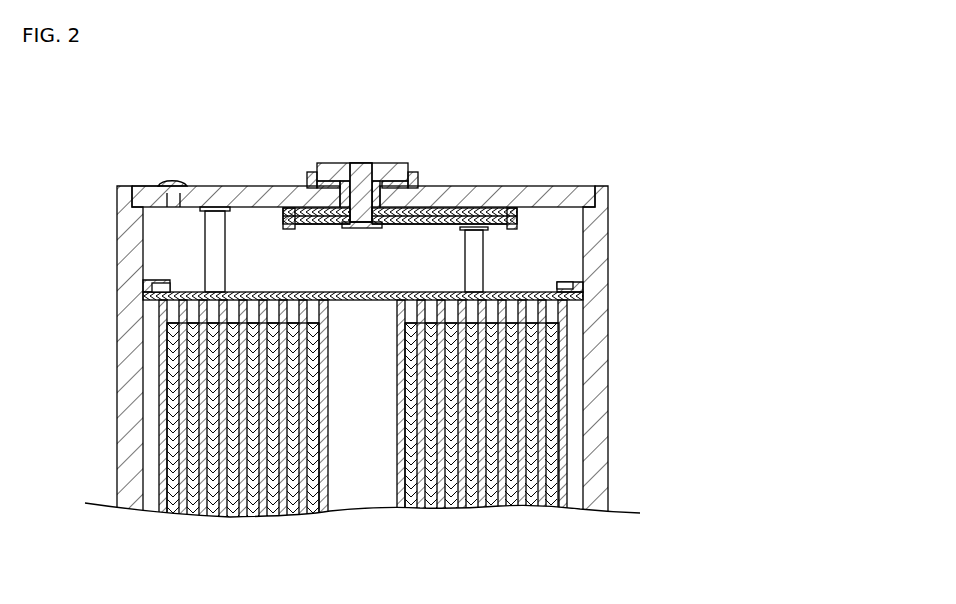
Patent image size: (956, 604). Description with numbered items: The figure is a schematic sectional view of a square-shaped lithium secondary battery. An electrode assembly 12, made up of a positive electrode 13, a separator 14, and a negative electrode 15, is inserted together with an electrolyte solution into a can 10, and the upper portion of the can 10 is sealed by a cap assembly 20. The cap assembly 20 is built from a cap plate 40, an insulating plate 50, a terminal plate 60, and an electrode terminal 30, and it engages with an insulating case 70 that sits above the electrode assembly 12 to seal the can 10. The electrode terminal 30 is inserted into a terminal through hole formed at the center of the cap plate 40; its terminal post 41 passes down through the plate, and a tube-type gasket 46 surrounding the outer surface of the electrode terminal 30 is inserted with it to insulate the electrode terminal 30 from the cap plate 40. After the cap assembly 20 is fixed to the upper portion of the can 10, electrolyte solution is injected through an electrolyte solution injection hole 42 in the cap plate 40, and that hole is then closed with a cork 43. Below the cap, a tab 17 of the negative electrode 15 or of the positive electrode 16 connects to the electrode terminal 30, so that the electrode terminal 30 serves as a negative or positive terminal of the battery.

The can 10 is at (600, 420).
The electrode assembly 12 is at (423, 438).
The positive electrode 13 is at (550, 507).
The separator 14 is at (560, 508).
The negative electrode 15 is at (534, 507).
The positive electrode 16 is at (212, 232).
The tab 17 is at (477, 263).
The cap assembly 20 is at (393, 159).
The electrode terminal 30 is at (359, 163).
The cap plate 40 is at (532, 187).
The terminal post 41 is at (310, 172).
The electrolyte solution injection hole 42 is at (152, 187).
The cork 43 is at (177, 182).
The tube-type gasket 46 is at (413, 172).
The insulating plate 50 is at (505, 229).
The terminal plate 60 is at (423, 227).
The insulating case 70 is at (183, 292).